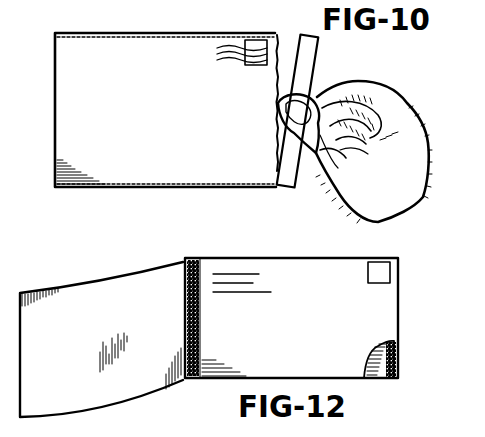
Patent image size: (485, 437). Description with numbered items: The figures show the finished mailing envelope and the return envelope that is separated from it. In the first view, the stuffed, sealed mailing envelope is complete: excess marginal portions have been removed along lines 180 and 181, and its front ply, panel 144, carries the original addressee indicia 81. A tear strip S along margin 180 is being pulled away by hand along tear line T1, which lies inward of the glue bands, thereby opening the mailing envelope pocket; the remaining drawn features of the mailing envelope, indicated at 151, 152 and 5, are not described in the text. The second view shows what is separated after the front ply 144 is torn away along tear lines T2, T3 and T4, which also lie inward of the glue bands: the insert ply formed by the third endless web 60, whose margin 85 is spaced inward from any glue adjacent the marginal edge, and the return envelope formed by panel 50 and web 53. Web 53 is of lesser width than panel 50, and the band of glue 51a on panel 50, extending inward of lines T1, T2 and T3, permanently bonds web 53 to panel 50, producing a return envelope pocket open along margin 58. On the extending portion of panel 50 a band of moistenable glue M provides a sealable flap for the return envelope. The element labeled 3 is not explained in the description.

In FIG. 10, the stamp / postmark area 151 is at (202, 33).
In FIG. 10, the envelope body 152 is at (125, 188).
In FIG. 10, the line 181 is at (55, 100).
In FIG. 10, the margin 180 is at (346, 51).
In FIG. 10, the panel 144 is at (75, 142).
In FIG. 10, the original addressee indicia 81 is at (170, 133).
In FIG. 10, the tear line T1 is at (275, 89).
In FIG. 12, the tear line T1 is at (20, 370).
In FIG. 10, the strip end 5 is at (313, 33).
In FIG. 10, the tear strip S is at (4, 51).
In FIG. 12, the third endless web 60 is at (73, 304).
In FIG. 12, the tear line T2 is at (130, 275).
In FIG. 12, the tear line T3 is at (125, 405).
In FIG. 12, the tear line T4 is at (184, 334).
In FIG. 12, the margin 85 is at (181, 276).
In FIG. 12, the band of moistenable glue M is at (195, 256).
In FIG. 12, the web 53 is at (283, 258).
In FIG. 12, the margin 58 is at (187, 312).
In FIG. 12, the panel 50 is at (380, 364).
In FIG. 12, the band of glue 51a is at (401, 368).
In FIG. 12, the sheet 3 is at (2, 261).